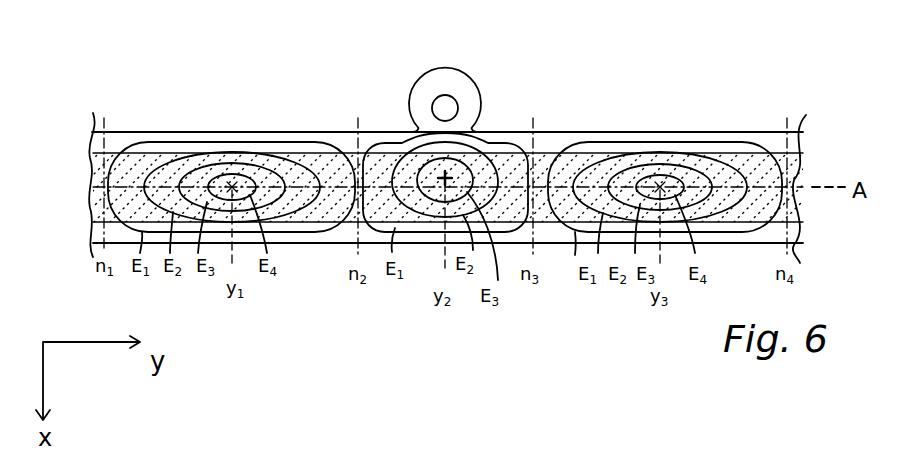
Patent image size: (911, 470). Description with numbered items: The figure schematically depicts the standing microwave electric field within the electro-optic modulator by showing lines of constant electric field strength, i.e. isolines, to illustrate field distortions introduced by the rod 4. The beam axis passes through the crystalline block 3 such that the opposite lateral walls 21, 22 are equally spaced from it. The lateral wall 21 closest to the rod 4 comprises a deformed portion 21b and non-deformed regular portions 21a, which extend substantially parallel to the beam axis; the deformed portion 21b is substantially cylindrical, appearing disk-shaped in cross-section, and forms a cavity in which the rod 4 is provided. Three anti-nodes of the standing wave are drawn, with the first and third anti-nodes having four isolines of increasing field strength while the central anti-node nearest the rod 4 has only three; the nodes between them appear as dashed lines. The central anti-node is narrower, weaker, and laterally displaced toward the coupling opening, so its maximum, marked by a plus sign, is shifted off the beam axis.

The lateral wall 21 is at (117, 132).
The regular portions 21a is at (208, 132).
The deformed portion 21b is at (457, 74).
The rod 4 is at (441, 109).
The crystalline block 3 is at (792, 168).
The lateral wall 22 is at (312, 244).